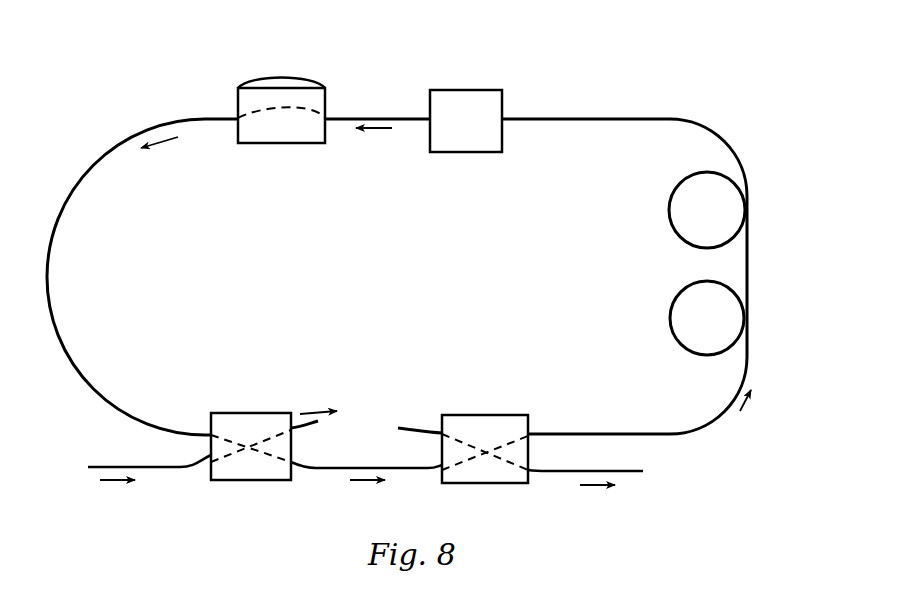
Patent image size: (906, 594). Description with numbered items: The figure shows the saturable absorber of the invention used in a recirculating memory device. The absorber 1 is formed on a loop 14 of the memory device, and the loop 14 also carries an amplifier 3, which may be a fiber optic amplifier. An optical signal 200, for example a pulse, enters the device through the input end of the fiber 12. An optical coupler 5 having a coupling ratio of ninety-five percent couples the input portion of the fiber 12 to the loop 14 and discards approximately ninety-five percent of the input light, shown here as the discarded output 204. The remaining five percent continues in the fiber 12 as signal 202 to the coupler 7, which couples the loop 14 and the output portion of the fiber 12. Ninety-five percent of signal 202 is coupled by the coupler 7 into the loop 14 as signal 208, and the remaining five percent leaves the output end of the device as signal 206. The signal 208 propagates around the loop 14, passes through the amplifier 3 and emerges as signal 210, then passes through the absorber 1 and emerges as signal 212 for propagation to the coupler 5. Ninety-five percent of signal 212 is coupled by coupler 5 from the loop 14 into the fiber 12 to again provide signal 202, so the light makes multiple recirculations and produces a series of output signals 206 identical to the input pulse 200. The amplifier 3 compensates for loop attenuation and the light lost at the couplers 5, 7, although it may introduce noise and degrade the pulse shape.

The absorber 1 is at (285, 144).
The amplifier 3 is at (472, 90).
The optical coupler 5 is at (250, 413).
The coupler 7 is at (497, 415).
The fiber 12 is at (143, 463).
The loop 14 is at (741, 161).
The optical signal 200 is at (106, 482).
The signal 202 is at (352, 482).
The output light signal 204 is at (313, 410).
The signal 206 is at (587, 487).
The signal 208 is at (735, 404).
The signal 210 is at (378, 130).
The signal 212 is at (168, 138).